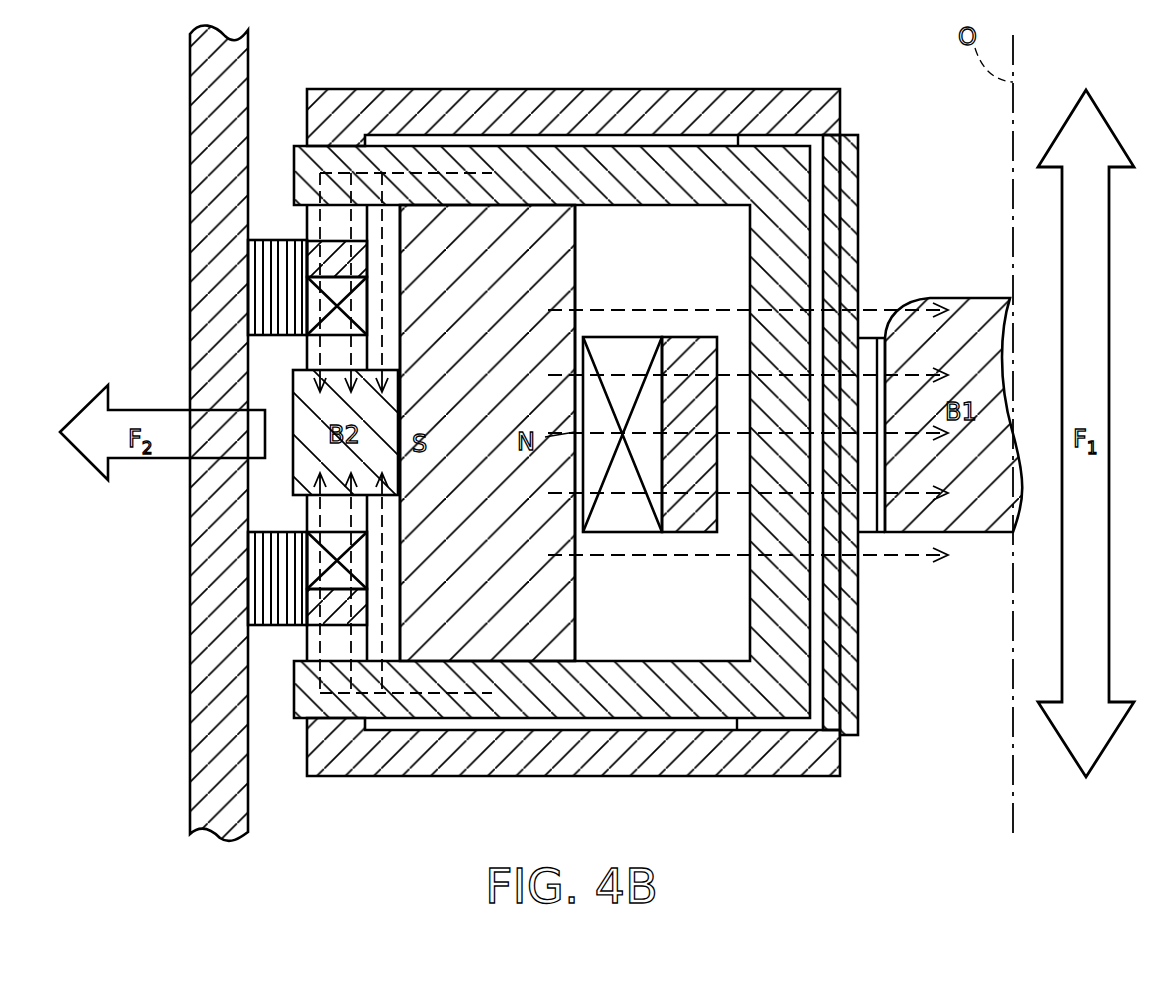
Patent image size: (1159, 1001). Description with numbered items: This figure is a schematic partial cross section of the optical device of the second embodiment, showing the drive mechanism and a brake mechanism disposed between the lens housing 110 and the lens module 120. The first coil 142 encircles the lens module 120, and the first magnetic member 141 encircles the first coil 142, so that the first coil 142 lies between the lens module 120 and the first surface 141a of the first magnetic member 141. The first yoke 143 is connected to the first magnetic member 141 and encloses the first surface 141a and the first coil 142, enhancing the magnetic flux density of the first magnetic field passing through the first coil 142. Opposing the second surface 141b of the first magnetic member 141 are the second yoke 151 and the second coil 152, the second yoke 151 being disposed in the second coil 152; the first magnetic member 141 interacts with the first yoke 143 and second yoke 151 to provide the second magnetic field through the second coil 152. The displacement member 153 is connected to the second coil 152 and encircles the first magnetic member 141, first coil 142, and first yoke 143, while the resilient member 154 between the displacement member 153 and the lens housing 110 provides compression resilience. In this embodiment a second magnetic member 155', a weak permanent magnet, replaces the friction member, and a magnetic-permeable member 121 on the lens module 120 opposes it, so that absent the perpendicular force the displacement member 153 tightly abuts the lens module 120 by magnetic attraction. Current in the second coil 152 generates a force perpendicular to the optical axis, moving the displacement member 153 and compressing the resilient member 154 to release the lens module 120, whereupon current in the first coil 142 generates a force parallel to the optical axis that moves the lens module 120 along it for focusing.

The lens housing 110 is at (188, 72).
The lens module 120 is at (685, 345).
The magnetic-permeable member 121 is at (884, 512).
The first magnetic member 141 is at (513, 255).
The first surface 141a is at (576, 235).
The second surface 141b is at (405, 215).
The first coil 142 is at (618, 510).
The first yoke 143 is at (692, 185).
The second yoke 151 is at (300, 390).
The second coil 152 is at (342, 298).
The displacement member 153 is at (764, 112).
The resilient member 154 is at (283, 261).
The second magnetic member 155' is at (870, 379).